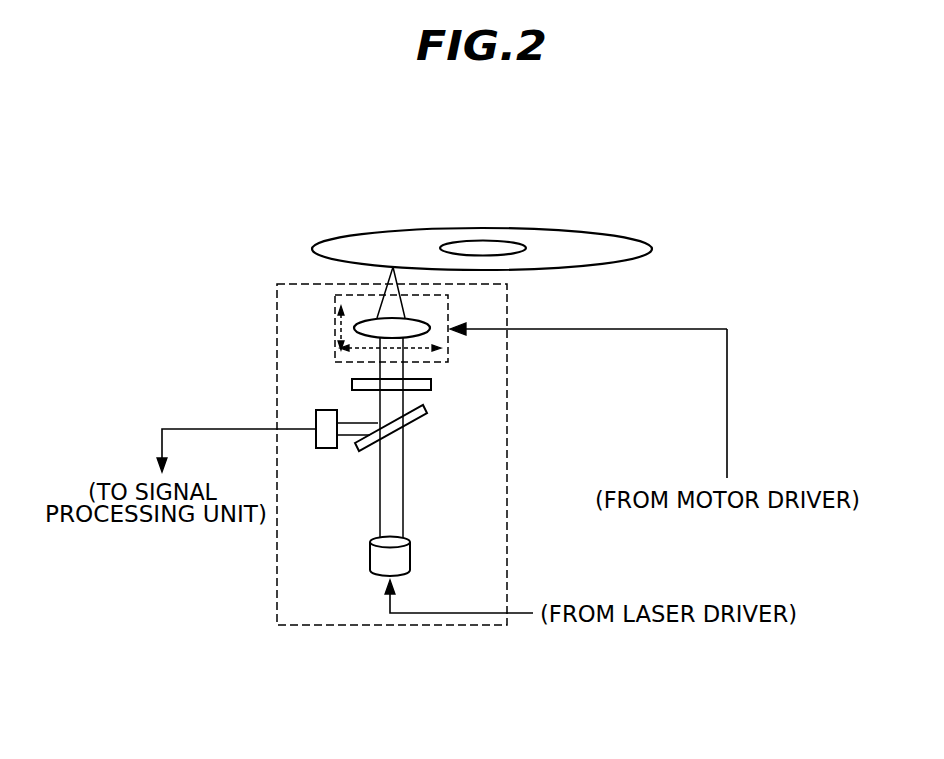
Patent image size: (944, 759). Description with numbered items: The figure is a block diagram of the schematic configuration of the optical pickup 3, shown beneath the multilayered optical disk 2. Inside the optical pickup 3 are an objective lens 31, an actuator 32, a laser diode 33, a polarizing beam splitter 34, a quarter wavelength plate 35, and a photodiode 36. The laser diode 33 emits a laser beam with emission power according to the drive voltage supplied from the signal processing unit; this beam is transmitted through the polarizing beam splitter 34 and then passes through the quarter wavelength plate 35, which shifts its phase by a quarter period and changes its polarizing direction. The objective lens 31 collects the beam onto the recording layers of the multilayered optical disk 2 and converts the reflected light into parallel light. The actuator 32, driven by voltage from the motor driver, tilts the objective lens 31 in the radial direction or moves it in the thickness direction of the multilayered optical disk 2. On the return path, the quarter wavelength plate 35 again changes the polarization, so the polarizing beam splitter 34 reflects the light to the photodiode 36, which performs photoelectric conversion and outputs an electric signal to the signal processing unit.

The multilayered optical disk 2 is at (576, 228).
The optical pickup 3 is at (508, 417).
The objective lens 31 is at (424, 323).
The actuator 32 is at (450, 340).
The laser diode 33 is at (377, 578).
The polarizing beam splitter 34 is at (428, 410).
The quarter wavelength plate 35 is at (352, 385).
The photodiode 36 is at (328, 448).